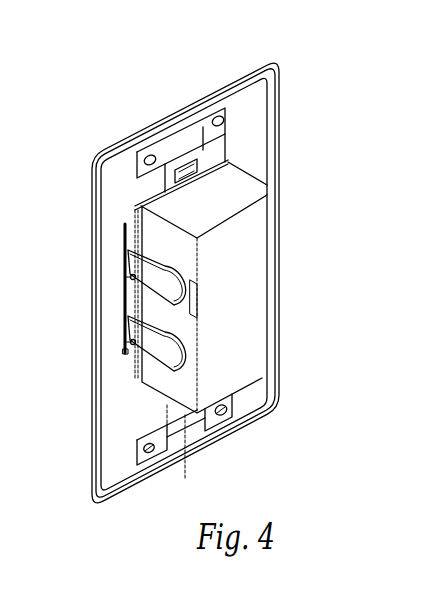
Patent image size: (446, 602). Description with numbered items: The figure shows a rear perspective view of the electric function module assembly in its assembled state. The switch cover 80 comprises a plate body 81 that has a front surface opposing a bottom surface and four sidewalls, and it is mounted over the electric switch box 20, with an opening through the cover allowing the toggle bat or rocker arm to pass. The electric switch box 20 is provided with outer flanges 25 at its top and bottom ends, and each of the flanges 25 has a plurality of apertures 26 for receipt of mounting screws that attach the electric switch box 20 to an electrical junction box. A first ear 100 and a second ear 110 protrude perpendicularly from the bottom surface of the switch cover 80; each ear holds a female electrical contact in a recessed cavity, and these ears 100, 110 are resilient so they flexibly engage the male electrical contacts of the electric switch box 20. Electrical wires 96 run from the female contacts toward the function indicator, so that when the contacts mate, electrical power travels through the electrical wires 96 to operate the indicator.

The electric switch box 20 is at (271, 316).
The outer flanges 25 is at (205, 106).
The apertures 26 is at (220, 417).
The switch cover 80 is at (222, 80).
The plate body 81 is at (266, 157).
The electrical wires 96 is at (125, 281).
The first ear 100 is at (124, 252).
The second ear 110 is at (124, 356).